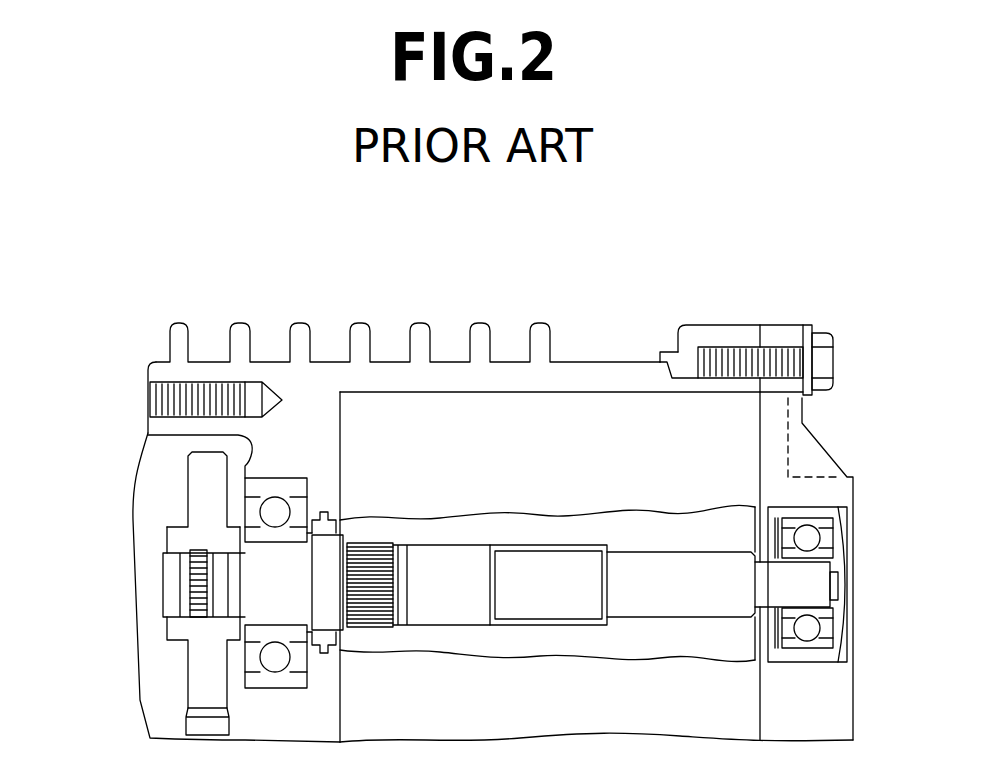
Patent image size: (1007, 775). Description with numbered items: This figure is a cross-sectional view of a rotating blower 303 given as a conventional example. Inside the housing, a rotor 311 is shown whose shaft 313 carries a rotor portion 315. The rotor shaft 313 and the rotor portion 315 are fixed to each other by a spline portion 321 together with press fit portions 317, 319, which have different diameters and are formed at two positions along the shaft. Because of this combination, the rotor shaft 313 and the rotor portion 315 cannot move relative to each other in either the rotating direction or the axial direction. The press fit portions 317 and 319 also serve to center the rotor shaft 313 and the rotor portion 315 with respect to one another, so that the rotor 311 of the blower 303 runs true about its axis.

The rotating blower 303 is at (637, 326).
The rotor 311 is at (542, 442).
The shaft 313 is at (580, 601).
The rotor portion 315 is at (587, 522).
The press fit portion 317 is at (453, 545).
The press fit portion 319 is at (680, 552).
The spline portion 321 is at (377, 543).